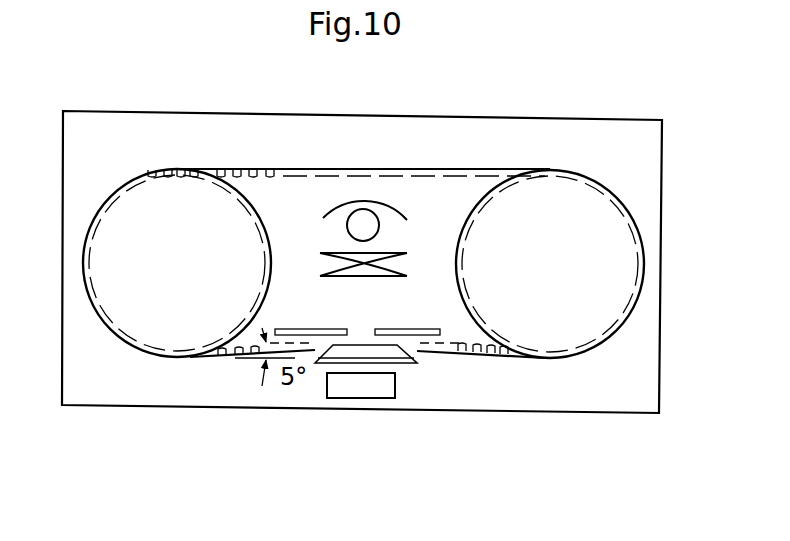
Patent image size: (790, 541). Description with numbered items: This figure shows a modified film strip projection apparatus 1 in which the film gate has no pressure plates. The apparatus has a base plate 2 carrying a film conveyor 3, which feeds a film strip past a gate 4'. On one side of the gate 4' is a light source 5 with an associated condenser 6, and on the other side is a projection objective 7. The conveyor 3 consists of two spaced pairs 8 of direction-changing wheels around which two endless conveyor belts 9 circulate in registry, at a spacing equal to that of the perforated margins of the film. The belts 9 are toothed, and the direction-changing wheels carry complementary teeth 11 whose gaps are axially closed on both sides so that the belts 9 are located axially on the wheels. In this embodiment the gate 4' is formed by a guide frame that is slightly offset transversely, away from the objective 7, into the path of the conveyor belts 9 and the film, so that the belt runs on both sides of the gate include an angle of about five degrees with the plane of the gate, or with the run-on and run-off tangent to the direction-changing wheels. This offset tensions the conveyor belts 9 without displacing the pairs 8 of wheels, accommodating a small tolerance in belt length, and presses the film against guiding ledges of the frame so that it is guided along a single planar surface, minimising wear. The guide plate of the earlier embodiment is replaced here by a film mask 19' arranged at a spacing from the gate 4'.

The film strip projection apparatus 1 is at (95, 407).
The base plate 2 is at (600, 405).
The film conveyor 3 is at (90, 297).
The gate 4' is at (366, 323).
The light source 5 is at (373, 226).
The condenser 6 is at (403, 263).
The projection objective 7 is at (390, 389).
The pairs of direction-changing wheels 8 is at (96, 222).
The conveyor belts 9 is at (388, 169).
The teeth 11 is at (205, 172).
The film mask 19' is at (357, 309).